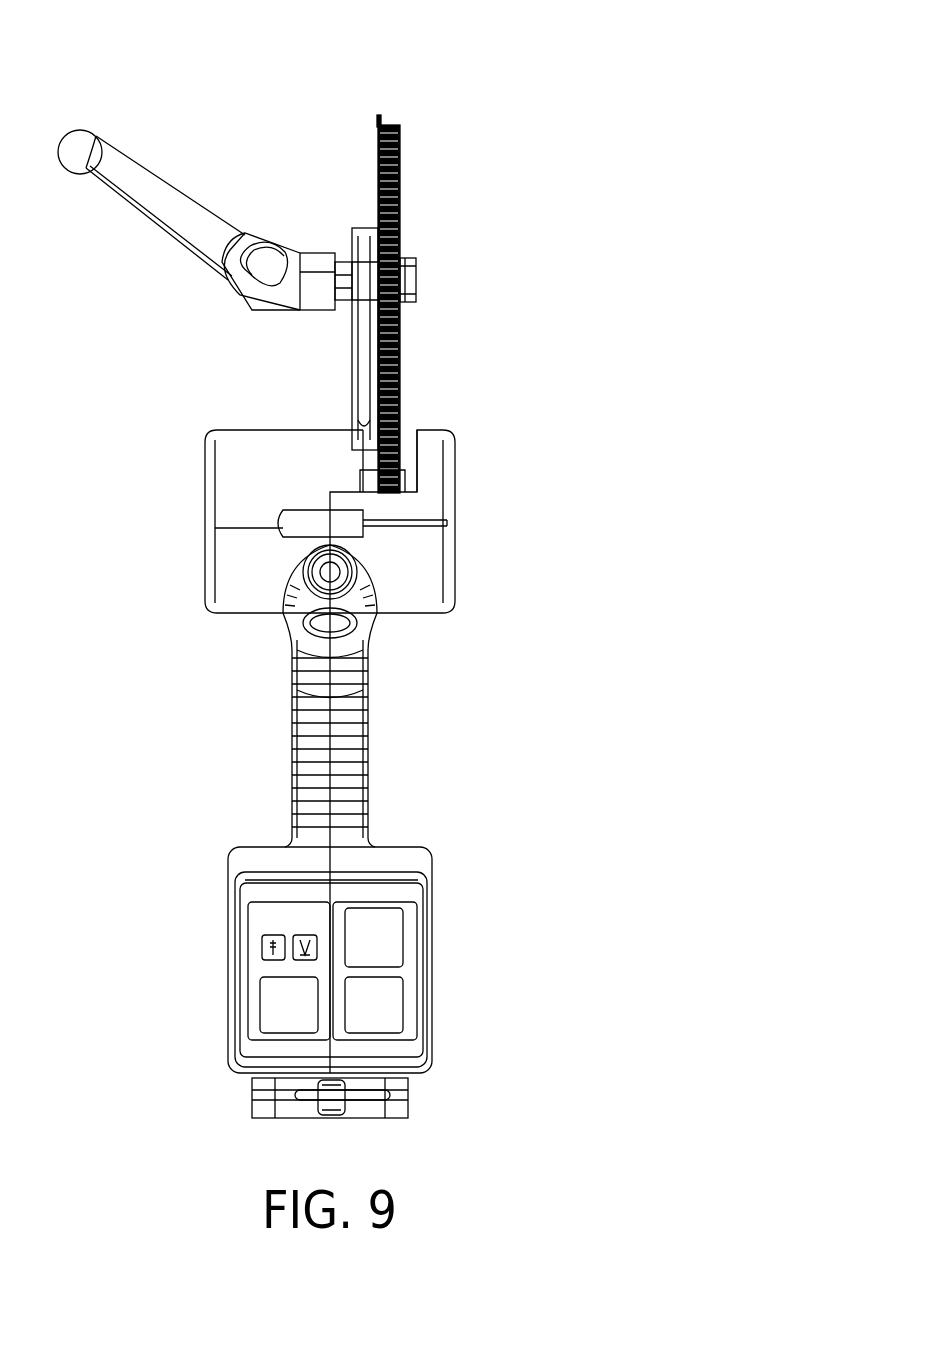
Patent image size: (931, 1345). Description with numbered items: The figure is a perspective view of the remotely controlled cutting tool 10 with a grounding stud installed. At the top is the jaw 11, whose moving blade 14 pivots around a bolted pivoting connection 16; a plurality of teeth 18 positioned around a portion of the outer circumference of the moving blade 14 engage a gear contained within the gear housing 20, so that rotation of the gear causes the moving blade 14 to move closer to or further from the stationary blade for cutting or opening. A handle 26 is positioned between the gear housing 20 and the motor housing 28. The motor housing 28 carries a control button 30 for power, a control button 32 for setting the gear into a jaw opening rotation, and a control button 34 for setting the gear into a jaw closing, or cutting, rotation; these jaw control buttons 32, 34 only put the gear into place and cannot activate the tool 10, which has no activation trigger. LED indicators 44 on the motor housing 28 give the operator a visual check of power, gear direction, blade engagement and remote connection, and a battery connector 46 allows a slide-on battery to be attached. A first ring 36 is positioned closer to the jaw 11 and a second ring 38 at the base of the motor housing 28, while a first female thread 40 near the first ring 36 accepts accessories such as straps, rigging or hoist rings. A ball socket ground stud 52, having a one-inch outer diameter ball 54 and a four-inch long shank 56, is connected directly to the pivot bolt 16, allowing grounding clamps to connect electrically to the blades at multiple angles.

The remotely controlled cutting tool 10 is at (748, 345).
The jaw 11 is at (488, 218).
The moving blade 14 is at (400, 135).
The bolted pivoting connection 16 is at (418, 276).
The teeth 18 is at (400, 176).
The gear housing 20 is at (455, 495).
The handle 26 is at (295, 712).
The motor housing 28 is at (432, 856).
The control button for power 30 is at (277, 1017).
The control button for jaw opening rotation 32 is at (388, 922).
The control button for jaw closing rotation 34 is at (395, 1020).
The first ring 36 is at (325, 625).
The second ring 38 is at (335, 1105).
The first female thread 40 is at (328, 572).
The LED indicators 44 is at (305, 938).
The battery connector 46 is at (265, 1120).
The ball socket ground stud 52 is at (200, 125).
The ball 54 is at (262, 270).
The shank 56 is at (112, 193).